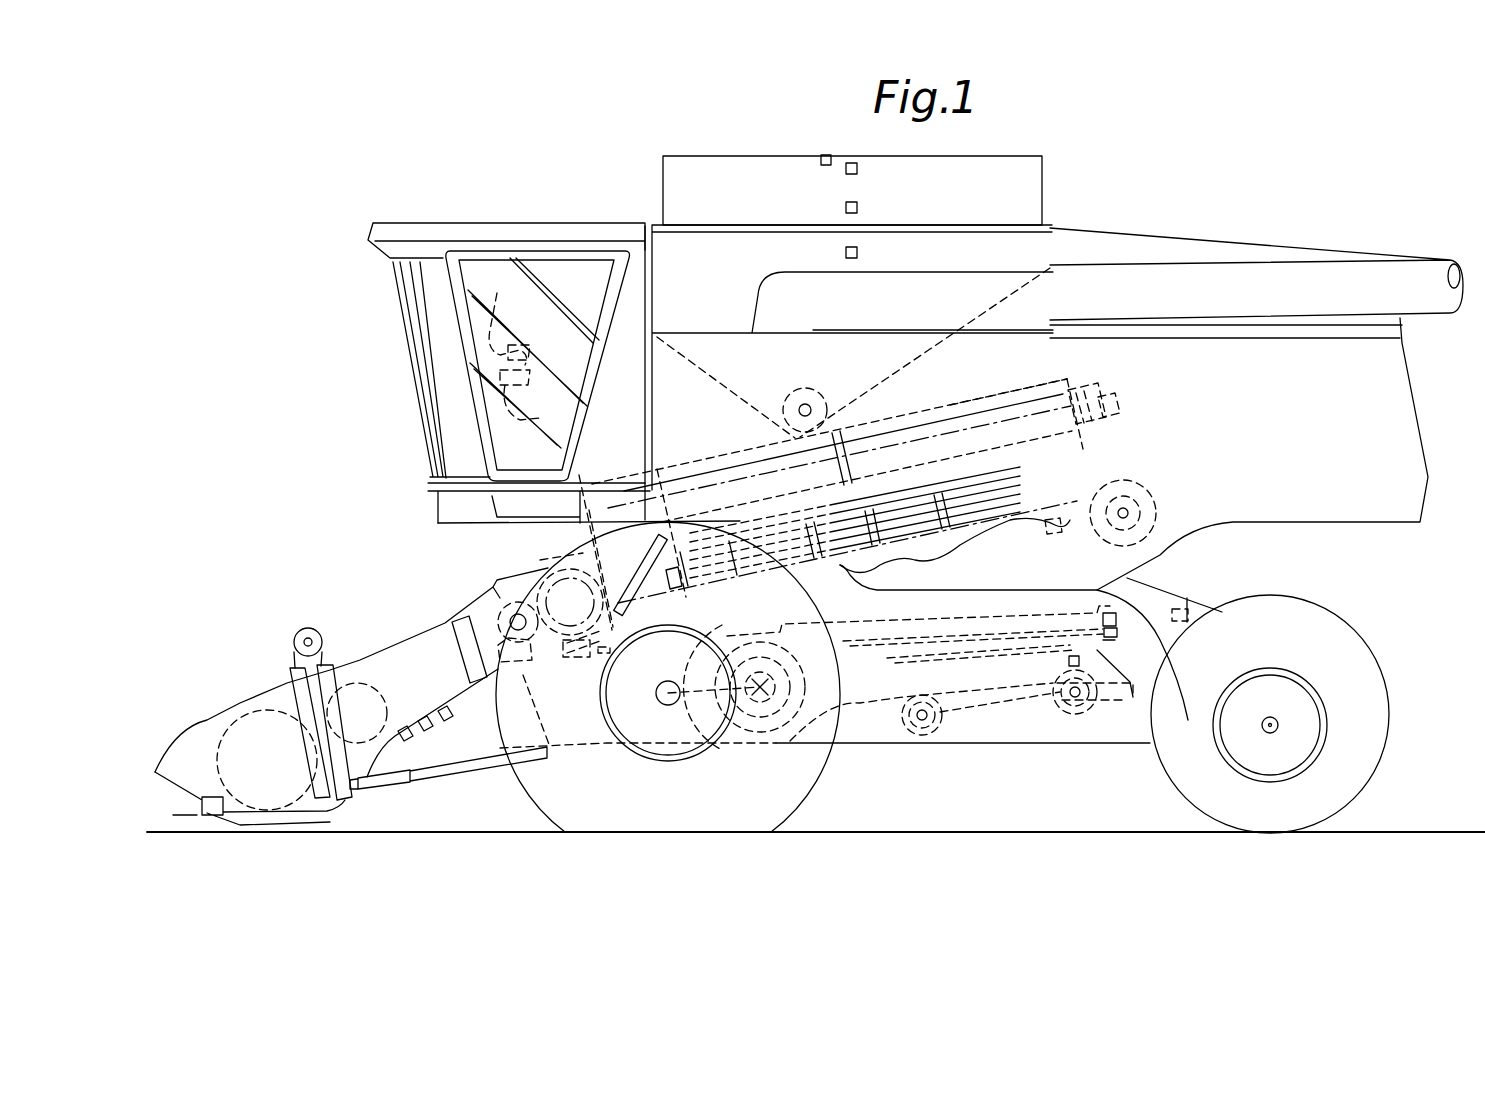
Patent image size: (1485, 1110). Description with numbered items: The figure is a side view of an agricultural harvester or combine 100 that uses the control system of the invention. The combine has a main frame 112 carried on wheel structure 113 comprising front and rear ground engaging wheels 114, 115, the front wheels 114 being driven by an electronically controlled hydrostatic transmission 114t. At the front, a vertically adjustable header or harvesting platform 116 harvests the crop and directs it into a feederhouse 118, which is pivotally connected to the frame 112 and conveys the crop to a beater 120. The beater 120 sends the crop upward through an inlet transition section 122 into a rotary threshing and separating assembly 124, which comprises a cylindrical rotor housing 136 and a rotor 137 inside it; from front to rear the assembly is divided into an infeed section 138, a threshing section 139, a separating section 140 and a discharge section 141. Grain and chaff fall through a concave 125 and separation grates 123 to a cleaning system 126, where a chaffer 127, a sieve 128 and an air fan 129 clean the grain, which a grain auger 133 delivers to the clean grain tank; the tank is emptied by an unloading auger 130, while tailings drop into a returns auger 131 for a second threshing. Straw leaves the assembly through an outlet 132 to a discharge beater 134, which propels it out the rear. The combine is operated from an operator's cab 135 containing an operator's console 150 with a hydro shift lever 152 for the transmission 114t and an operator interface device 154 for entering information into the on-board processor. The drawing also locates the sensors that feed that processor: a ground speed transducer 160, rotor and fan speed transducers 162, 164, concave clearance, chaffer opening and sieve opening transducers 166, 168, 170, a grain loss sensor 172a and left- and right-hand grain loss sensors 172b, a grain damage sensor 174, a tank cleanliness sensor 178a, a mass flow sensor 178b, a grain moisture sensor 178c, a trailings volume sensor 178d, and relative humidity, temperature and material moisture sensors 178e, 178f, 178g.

The agricultural harvester or combine 100 is at (1157, 130).
The main frame 112 is at (1190, 585).
The wheel structure 113 is at (825, 808).
The front ground engaging wheels 114 is at (757, 812).
The hydrostatic transmission 114t is at (667, 776).
The rear ground engaging wheels 115 is at (1155, 772).
The header or harvesting platform 116 is at (232, 668).
The feederhouse 118 is at (378, 672).
The beater 120 is at (550, 570).
The inlet transition section 122 is at (583, 547).
The separation grates 123 is at (962, 540).
The rotary threshing and separating assembly 124 is at (720, 476).
The concave 125 is at (775, 590).
The cleaning system 126 is at (922, 612).
The chaffer 127 is at (1140, 626).
The sieve 128 is at (1112, 650).
The air fan 129 is at (755, 742).
The unloading auger 130 is at (1362, 302).
The returns auger 131 is at (1058, 713).
The outlet 132 is at (1100, 450).
The grain auger 133 is at (945, 735).
The discharge beater 134 is at (1160, 512).
The operator's cab 135 is at (530, 220).
The rotor housing 136 is at (1030, 380).
The rotor 137 is at (1047, 413).
The infeed section 138 is at (618, 468).
The threshing section 139 is at (757, 428).
The separating section 140 is at (953, 393).
The discharge section 141 is at (1075, 420).
The operator's console 150 is at (545, 345).
The hydro shift lever 152 is at (500, 315).
The operator interface device 154 is at (522, 406).
The ground speed transducer 160 is at (600, 660).
The rotor speed transducer 162 is at (630, 547).
The fan speed transducer 164 is at (770, 700).
The concave clearance transducer 166 is at (678, 590).
The chaffer opening transducer 168 is at (1107, 594).
The sieve opening transducer 170 is at (1123, 636).
The grain loss sensor 172a is at (1050, 515).
The left- and right-hand grain loss sensors 172b is at (1192, 610).
The grain damage sensor 174 is at (818, 163).
The tank cleanliness sensor 178a is at (863, 168).
The mass flow sensor 178b is at (863, 207).
The grain moisture sensor 178c is at (863, 252).
The trailings volume sensor 178d is at (1062, 664).
The relative humidity sensor 178e is at (401, 746).
The temperature sensor 178f is at (428, 736).
The material moisture sensor 178g is at (455, 721).